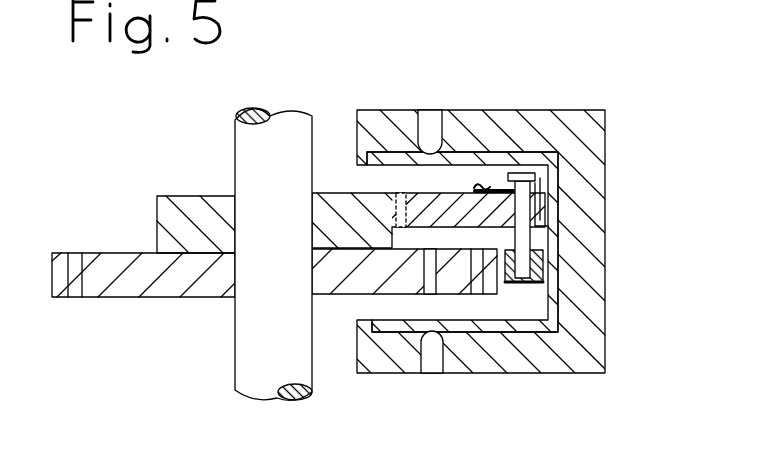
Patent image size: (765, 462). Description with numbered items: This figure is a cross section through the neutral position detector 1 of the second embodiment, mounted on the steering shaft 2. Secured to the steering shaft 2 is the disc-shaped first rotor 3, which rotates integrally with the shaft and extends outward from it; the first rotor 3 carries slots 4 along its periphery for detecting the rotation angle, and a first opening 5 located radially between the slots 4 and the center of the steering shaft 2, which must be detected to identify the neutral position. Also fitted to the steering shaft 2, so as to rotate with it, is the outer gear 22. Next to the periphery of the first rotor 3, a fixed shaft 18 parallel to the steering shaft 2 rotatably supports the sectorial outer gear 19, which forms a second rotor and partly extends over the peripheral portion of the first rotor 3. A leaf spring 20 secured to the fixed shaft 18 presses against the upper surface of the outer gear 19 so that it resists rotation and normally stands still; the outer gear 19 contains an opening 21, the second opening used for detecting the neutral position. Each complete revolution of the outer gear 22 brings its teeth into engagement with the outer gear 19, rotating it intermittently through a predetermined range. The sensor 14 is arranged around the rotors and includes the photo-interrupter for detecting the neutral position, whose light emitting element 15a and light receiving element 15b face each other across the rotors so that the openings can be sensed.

The neutral position detector 1 is at (611, 161).
The steering shaft 2 is at (235, 352).
The first rotor 3 is at (115, 253).
The slots 4 is at (70, 253).
The first opening 5 is at (429, 294).
The sensor 14 is at (604, 262).
The light emitting element 15a is at (432, 360).
The light receiving element 15b is at (426, 120).
The fixed shaft 18 is at (522, 233).
The sectorial outer gear 19 is at (466, 190).
The leaf spring 20 is at (505, 188).
The opening 21 is at (425, 192).
The outer gear 22 is at (186, 196).